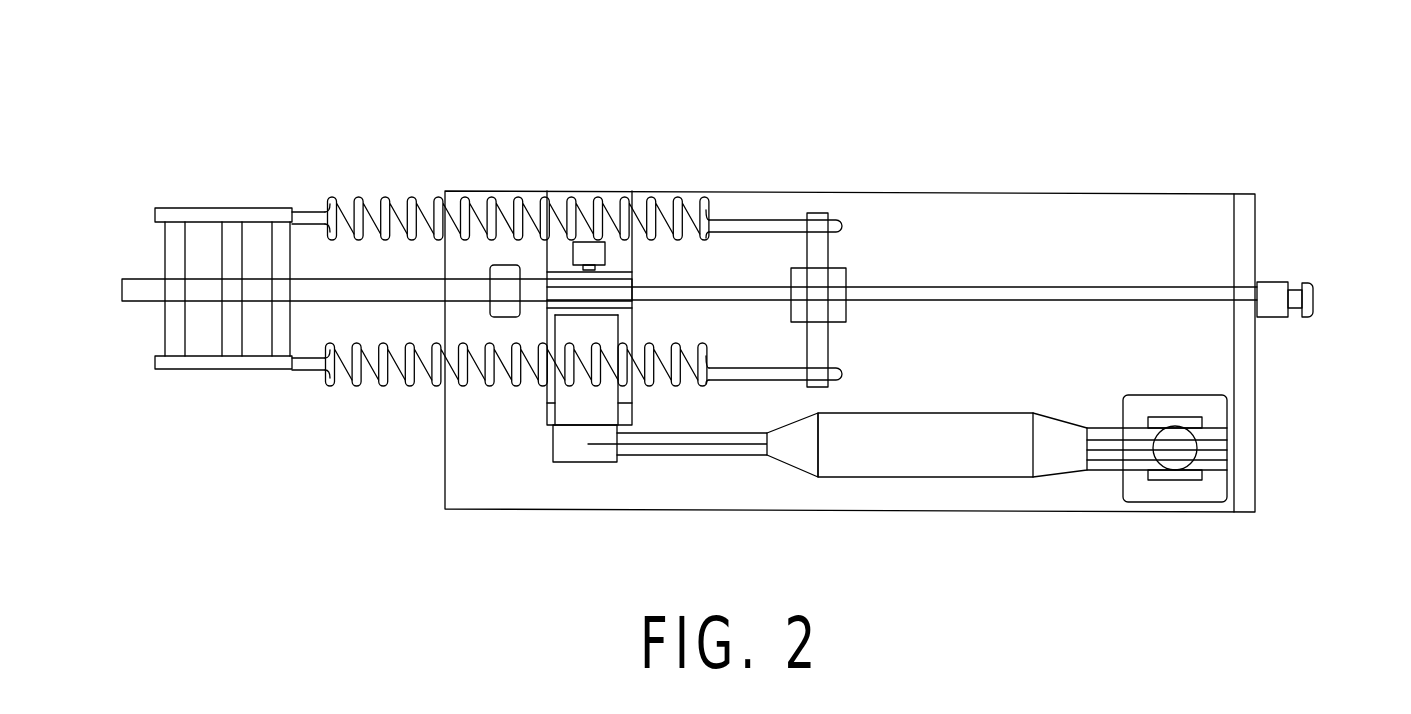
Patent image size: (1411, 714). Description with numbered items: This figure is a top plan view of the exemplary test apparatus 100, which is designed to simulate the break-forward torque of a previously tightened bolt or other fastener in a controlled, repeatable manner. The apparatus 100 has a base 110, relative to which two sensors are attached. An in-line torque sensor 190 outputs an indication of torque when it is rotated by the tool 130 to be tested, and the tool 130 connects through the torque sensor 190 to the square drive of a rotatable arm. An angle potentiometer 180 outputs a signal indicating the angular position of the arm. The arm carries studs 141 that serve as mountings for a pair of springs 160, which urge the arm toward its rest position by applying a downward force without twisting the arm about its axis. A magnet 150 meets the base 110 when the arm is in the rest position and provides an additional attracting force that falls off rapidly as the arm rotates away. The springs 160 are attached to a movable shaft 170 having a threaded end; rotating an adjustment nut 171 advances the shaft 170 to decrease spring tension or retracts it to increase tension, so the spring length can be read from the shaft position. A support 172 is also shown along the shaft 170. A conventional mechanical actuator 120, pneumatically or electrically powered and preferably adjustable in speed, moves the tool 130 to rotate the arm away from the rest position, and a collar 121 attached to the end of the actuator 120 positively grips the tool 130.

The test apparatus 100 is at (900, 91).
The base 110 is at (1015, 195).
The mechanical actuator 120 is at (1198, 395).
The collar 121 is at (1180, 480).
The tool to be tested 130 is at (928, 420).
The studs 141 is at (165, 252).
The magnet 150 is at (490, 330).
The springs 160 is at (392, 195).
The movable shaft 170 is at (1022, 287).
The adjustment nut 171 is at (1295, 273).
The guide support 172 is at (855, 265).
The angle potentiometer 180 is at (608, 252).
The in-line torque sensor 190 is at (565, 413).